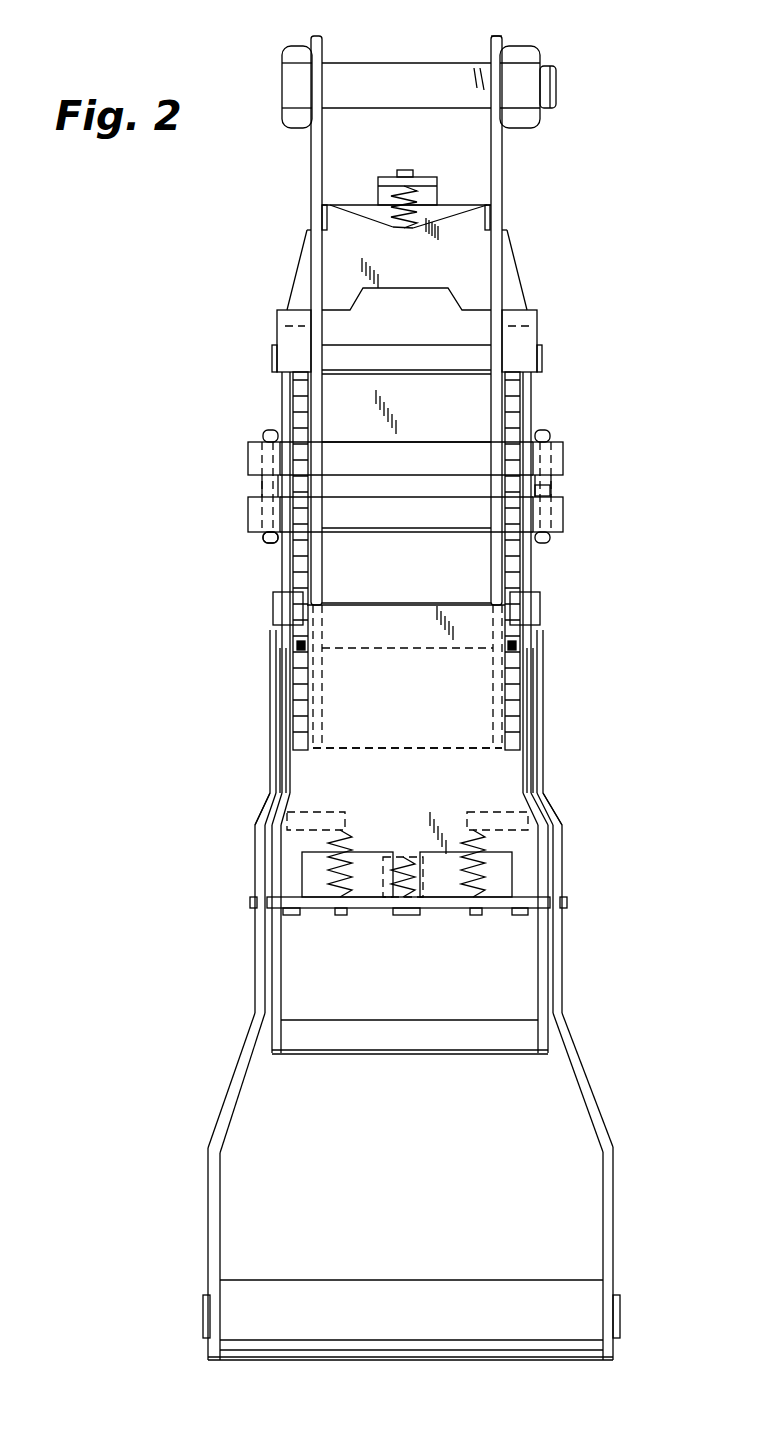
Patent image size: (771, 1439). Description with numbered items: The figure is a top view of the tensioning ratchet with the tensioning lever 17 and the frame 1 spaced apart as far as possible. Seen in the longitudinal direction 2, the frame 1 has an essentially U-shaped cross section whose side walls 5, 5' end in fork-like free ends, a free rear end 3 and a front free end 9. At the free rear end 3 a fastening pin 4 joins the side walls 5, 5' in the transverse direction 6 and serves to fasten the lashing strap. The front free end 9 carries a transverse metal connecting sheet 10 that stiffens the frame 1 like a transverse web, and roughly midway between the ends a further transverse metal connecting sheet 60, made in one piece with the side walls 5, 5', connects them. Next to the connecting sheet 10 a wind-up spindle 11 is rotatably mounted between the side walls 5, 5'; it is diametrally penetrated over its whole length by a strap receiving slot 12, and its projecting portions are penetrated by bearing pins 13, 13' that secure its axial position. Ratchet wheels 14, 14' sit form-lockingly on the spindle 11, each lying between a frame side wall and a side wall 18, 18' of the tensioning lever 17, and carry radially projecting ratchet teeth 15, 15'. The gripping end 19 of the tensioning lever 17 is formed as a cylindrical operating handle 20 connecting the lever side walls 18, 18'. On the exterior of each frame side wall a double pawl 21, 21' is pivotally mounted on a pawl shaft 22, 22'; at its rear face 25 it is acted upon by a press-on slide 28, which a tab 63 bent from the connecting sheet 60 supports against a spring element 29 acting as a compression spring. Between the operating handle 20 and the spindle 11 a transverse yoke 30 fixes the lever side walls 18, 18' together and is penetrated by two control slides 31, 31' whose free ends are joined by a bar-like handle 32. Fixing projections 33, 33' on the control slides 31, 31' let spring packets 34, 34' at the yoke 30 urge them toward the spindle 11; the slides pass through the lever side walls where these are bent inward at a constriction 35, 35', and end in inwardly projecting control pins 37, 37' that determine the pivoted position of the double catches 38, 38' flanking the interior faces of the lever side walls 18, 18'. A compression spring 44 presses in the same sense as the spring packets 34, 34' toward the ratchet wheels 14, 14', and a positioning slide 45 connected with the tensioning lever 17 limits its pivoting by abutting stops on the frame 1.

The frame 1 is at (519, 205).
The longitudinal direction 2 is at (667, 672).
The free rear end 3 is at (496, 36).
The fastening pin 4 is at (415, 97).
The side wall 5 is at (281, 320).
The side wall 5' is at (535, 320).
The transverse direction 6 is at (330, 24).
The front free end 9 is at (495, 753).
The transverse metal connecting sheet 10 is at (440, 648).
The wind-up spindle 11 is at (250, 463).
The strap receiving slot 12 is at (258, 494).
The bearing pin 13 is at (229, 552).
The nut 13' is at (585, 481).
The ratchet wheel 14 is at (238, 582).
The ratchet wheel 14' is at (573, 582).
The ratchet teeth 15 is at (260, 561).
The ratchet teeth 15' is at (565, 561).
The tensioning lever 17 is at (602, 1075).
The tensioning lever side wall 18 is at (233, 689).
The tensioning lever side wall 18' is at (579, 686).
The gripping end 19 is at (213, 1366).
The operating handle 20 is at (385, 1283).
The double pawl 21 is at (249, 339).
The double pawl 21' is at (564, 341).
The pawl shaft 22 is at (245, 490).
The spacer 22' is at (571, 495).
The rear face 25 is at (518, 312).
The press-on slide 28 is at (508, 272).
The spring element 29 is at (428, 210).
The transverse yoke 30 is at (365, 900).
The control slide 31 is at (270, 841).
The control slide 31' is at (547, 841).
The bar-like handle 32 is at (378, 1042).
The fixing projection 33 is at (329, 800).
The fixing projection 33' is at (490, 800).
The spring packet 34 is at (291, 863).
The spring packet 34' is at (533, 869).
The constriction 35 is at (239, 789).
The constriction 35' is at (585, 801).
The control pin 37 is at (329, 670).
The control pin 37' is at (480, 670).
The double catch 38 is at (237, 720).
The double catch 38' is at (577, 720).
The compression spring 44 is at (430, 885).
The positioning slide 45 is at (380, 617).
The transverse metal connecting sheet 60 is at (473, 408).
The tab 63 is at (385, 178).